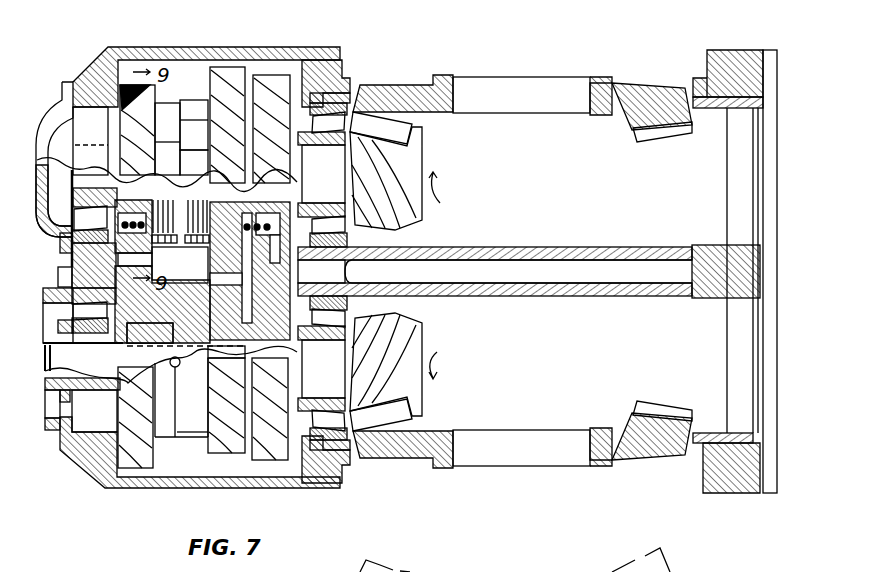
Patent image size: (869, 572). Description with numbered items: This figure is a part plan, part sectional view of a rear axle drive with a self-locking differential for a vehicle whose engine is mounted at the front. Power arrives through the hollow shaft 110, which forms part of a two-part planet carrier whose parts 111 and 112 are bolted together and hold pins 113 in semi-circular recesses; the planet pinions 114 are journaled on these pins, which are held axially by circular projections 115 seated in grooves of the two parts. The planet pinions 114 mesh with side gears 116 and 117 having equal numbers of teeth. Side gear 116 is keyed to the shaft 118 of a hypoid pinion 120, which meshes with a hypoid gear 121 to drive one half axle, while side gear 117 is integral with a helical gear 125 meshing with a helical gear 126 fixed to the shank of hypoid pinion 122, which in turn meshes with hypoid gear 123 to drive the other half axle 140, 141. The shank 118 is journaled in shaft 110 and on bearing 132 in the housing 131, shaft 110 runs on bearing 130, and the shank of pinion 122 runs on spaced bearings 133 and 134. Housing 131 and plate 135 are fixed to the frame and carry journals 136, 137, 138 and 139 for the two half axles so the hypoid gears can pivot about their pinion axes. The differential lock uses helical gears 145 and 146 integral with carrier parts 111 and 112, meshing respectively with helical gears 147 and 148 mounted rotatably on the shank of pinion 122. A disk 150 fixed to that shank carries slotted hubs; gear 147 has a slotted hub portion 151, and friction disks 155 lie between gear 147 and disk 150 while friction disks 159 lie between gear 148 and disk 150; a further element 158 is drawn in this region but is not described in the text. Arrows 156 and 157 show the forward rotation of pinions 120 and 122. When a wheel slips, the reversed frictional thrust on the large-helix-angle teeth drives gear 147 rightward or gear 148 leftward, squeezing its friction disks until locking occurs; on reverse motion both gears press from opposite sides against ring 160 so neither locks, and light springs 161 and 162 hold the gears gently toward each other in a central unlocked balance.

The shaft 110 is at (47, 388).
The planet carrier part 111 is at (167, 420).
The planet carrier part 112 is at (193, 420).
The pins 113 is at (174, 368).
The planet pinions 114 is at (232, 349).
The circular projections 115 is at (117, 290).
The side gear 116 is at (127, 345).
The side gear 117 is at (240, 356).
The shaft 118 is at (285, 348).
The hypoid pinion 120 is at (408, 350).
The hypoid gear 121 is at (403, 440).
The hypoid pinion 122 is at (407, 168).
The hypoid gear 123 is at (402, 97).
The helical gear 125 is at (269, 457).
The helical gear 126 is at (266, 90).
The anti-friction bearing 130 is at (88, 415).
The housing 131 is at (97, 463).
The anti-friction bearing 132 is at (324, 485).
The anti-friction bearing 133 is at (88, 107).
The anti-friction bearing 134 is at (344, 67).
The plate 135 is at (740, 487).
The journal 136 is at (344, 476).
The journal 137 is at (732, 442).
The journal 138 is at (327, 110).
The journal 139 is at (737, 92).
The half axle 140 is at (612, 285).
The half axle 141 is at (483, 252).
The helical gear 145 is at (135, 465).
The helical gear 146 is at (218, 447).
The helical gear 147 is at (130, 97).
The helical gear 148 is at (224, 75).
The disk 150 is at (180, 266).
The slotted hub portion 151 is at (168, 123).
The friction disks 155 is at (163, 244).
The arrow 156 is at (440, 358).
The arrow 157 is at (440, 188).
The clutch plate 158 is at (193, 107).
The friction disks 159 is at (190, 244).
The ring 160 is at (197, 118).
The spring 161 is at (70, 243).
The spring 162 is at (247, 229).